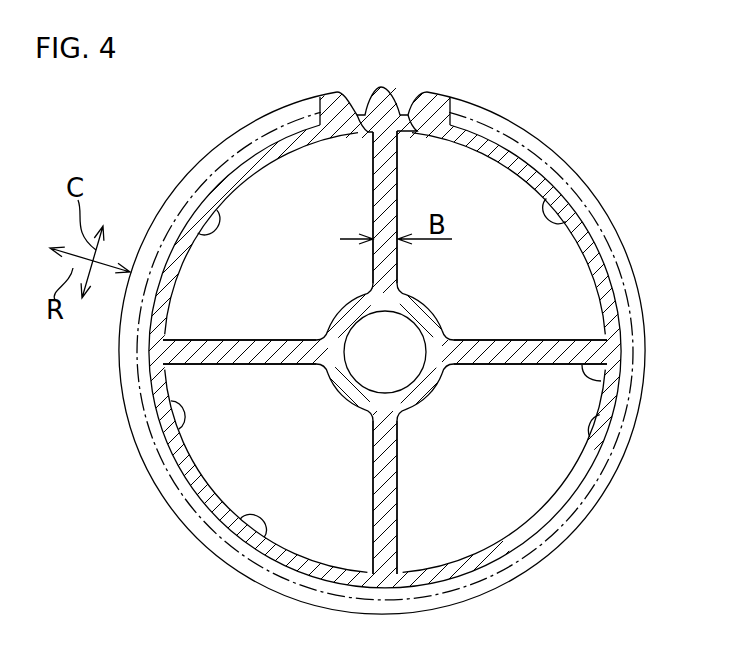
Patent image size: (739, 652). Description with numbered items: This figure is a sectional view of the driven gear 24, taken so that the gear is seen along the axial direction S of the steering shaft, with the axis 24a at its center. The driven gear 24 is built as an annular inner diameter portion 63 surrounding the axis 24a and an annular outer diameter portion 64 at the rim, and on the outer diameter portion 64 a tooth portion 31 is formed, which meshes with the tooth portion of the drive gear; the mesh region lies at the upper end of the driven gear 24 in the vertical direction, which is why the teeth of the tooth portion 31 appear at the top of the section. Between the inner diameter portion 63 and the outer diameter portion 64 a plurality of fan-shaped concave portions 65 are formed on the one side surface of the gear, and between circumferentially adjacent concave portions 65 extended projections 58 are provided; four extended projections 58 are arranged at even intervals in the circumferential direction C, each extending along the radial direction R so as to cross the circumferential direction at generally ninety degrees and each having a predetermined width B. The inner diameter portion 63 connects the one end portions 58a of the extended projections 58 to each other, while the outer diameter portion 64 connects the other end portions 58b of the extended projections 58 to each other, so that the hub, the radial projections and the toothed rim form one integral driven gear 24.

The driven gear 24 is at (522, 77).
The axis 24a is at (388, 357).
The tooth portion 31 is at (392, 110).
The extended projection 58 is at (358, 113).
The one end portion 58a is at (470, 339).
The other end portion 58b is at (400, 188).
The inner diameter portion 63 is at (337, 399).
The outer diameter portion 64 is at (166, 406).
The concave portion 65 is at (208, 212).